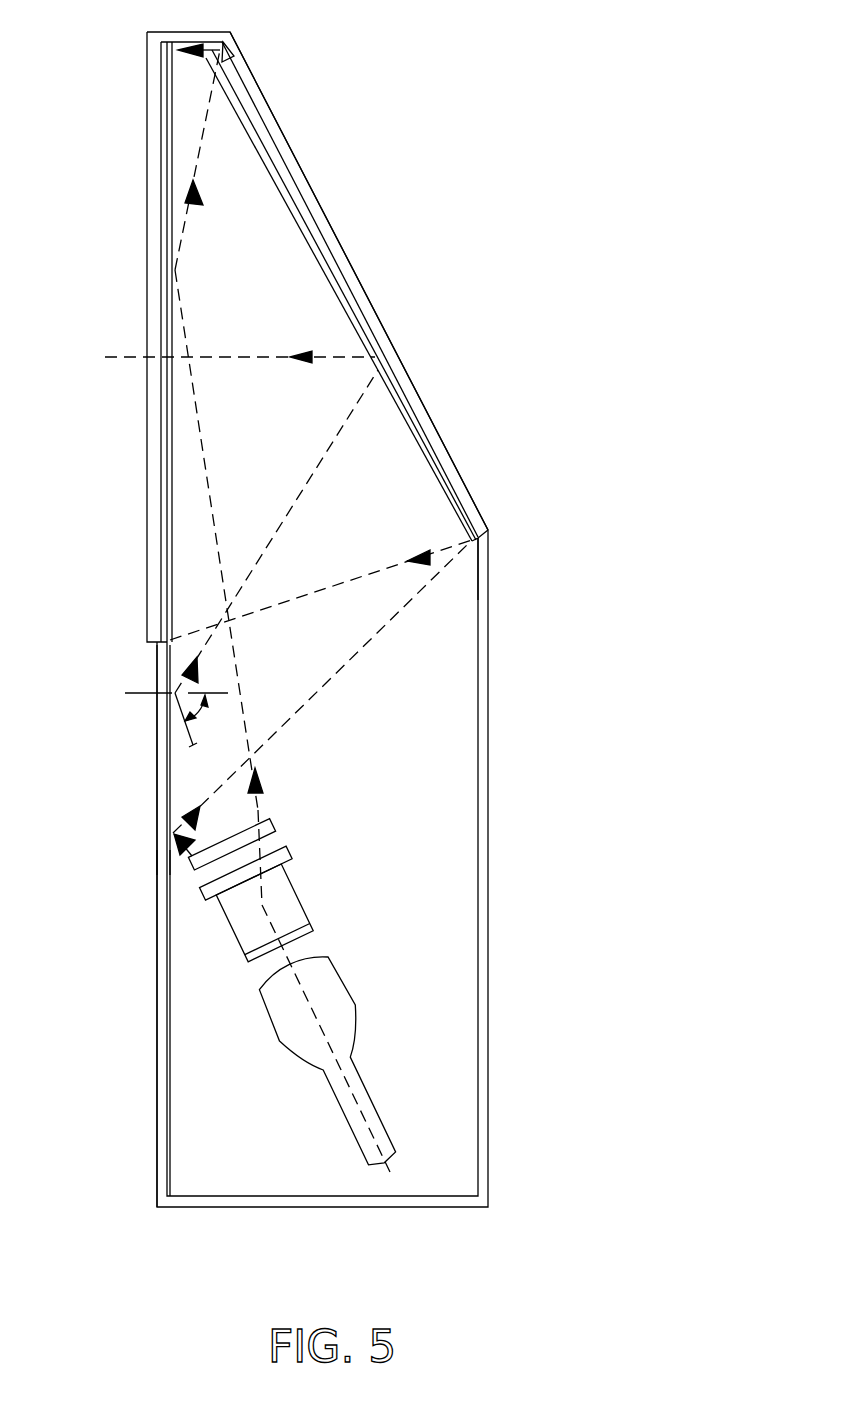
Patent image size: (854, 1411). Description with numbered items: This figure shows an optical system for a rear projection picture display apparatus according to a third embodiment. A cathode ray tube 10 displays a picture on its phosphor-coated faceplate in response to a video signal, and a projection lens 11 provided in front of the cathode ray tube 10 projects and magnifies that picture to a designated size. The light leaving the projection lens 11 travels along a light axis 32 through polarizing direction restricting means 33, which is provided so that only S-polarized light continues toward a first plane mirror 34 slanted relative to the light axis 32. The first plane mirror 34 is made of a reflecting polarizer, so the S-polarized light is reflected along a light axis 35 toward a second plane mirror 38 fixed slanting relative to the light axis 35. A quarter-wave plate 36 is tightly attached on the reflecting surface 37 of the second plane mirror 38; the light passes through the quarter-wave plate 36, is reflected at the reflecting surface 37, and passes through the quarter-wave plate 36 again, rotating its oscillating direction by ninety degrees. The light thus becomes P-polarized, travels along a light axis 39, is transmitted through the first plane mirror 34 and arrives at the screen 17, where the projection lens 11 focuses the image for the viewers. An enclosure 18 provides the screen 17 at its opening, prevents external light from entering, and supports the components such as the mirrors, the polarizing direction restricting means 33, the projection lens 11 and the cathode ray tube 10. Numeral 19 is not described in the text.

The cathode ray tube 10 is at (355, 1010).
The projection lens 11 is at (300, 915).
The screen 17 is at (150, 283).
The enclosure 18 is at (247, 75).
The side panel 19 is at (167, 532).
The light axis 32 is at (190, 748).
The polarizing direction restricting means 33 is at (168, 860).
The first plane mirror 34 is at (168, 735).
The light axis 35 is at (405, 414).
The quarter-wave plate 36 is at (385, 378).
The reflecting surface 37 is at (427, 450).
The second plane mirror 38 is at (455, 498).
The light axis 39 is at (340, 357).